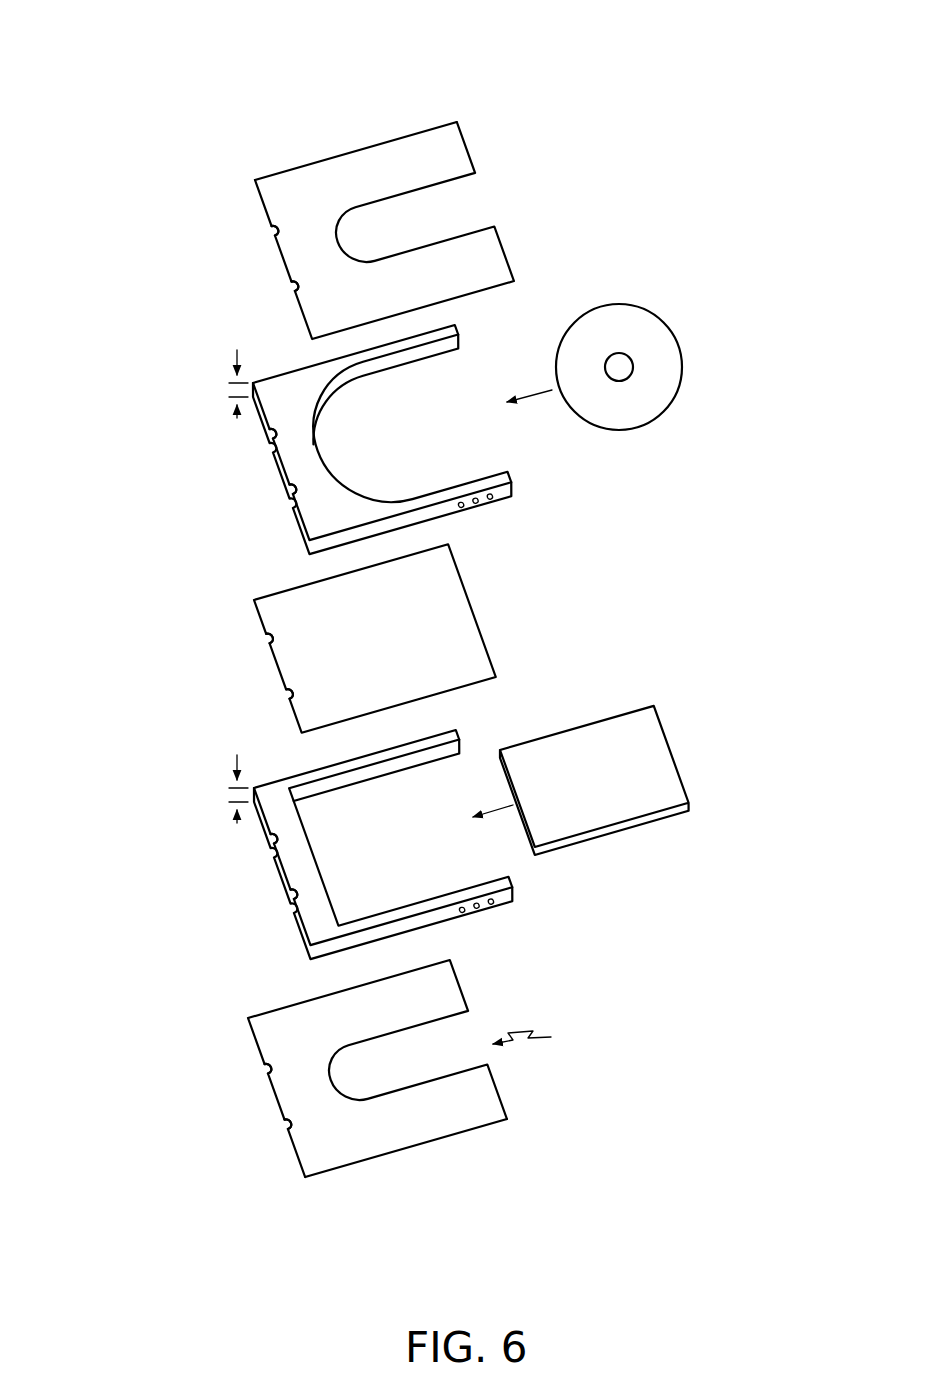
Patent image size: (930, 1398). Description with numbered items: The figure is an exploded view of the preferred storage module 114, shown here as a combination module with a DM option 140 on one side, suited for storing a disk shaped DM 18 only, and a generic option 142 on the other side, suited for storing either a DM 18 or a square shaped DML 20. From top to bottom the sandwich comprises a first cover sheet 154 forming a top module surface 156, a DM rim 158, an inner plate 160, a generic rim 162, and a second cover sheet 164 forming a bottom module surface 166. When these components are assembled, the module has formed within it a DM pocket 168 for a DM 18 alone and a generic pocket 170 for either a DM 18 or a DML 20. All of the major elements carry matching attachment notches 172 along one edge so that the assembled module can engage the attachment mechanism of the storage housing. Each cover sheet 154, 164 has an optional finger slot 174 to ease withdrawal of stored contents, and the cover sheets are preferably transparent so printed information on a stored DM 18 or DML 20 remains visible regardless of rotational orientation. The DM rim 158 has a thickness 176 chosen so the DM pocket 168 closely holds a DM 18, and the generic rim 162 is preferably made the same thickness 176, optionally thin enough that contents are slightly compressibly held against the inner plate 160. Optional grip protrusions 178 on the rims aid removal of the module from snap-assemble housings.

The storage module 114 is at (154, 102).
The DM option 140 is at (164, 139).
The generic option 142 is at (164, 766).
The first cover sheet 154 is at (462, 150).
The top module surface 156 is at (315, 165).
The DM rim 158 is at (455, 335).
The inner plate 160 is at (473, 632).
The generic rim 162 is at (453, 738).
The second cover sheet 164 is at (455, 1000).
The bottom module surface 166 is at (476, 1156).
The DM pocket 168 is at (535, 454).
The generic pocket 170 is at (517, 862).
The attachment notches 172 is at (292, 285).
The finger slot 174 is at (546, 1039).
The thickness 176 is at (237, 350).
The grip protrusions 178 is at (476, 500).
The DM 18 is at (656, 318).
The DML 20 is at (663, 753).